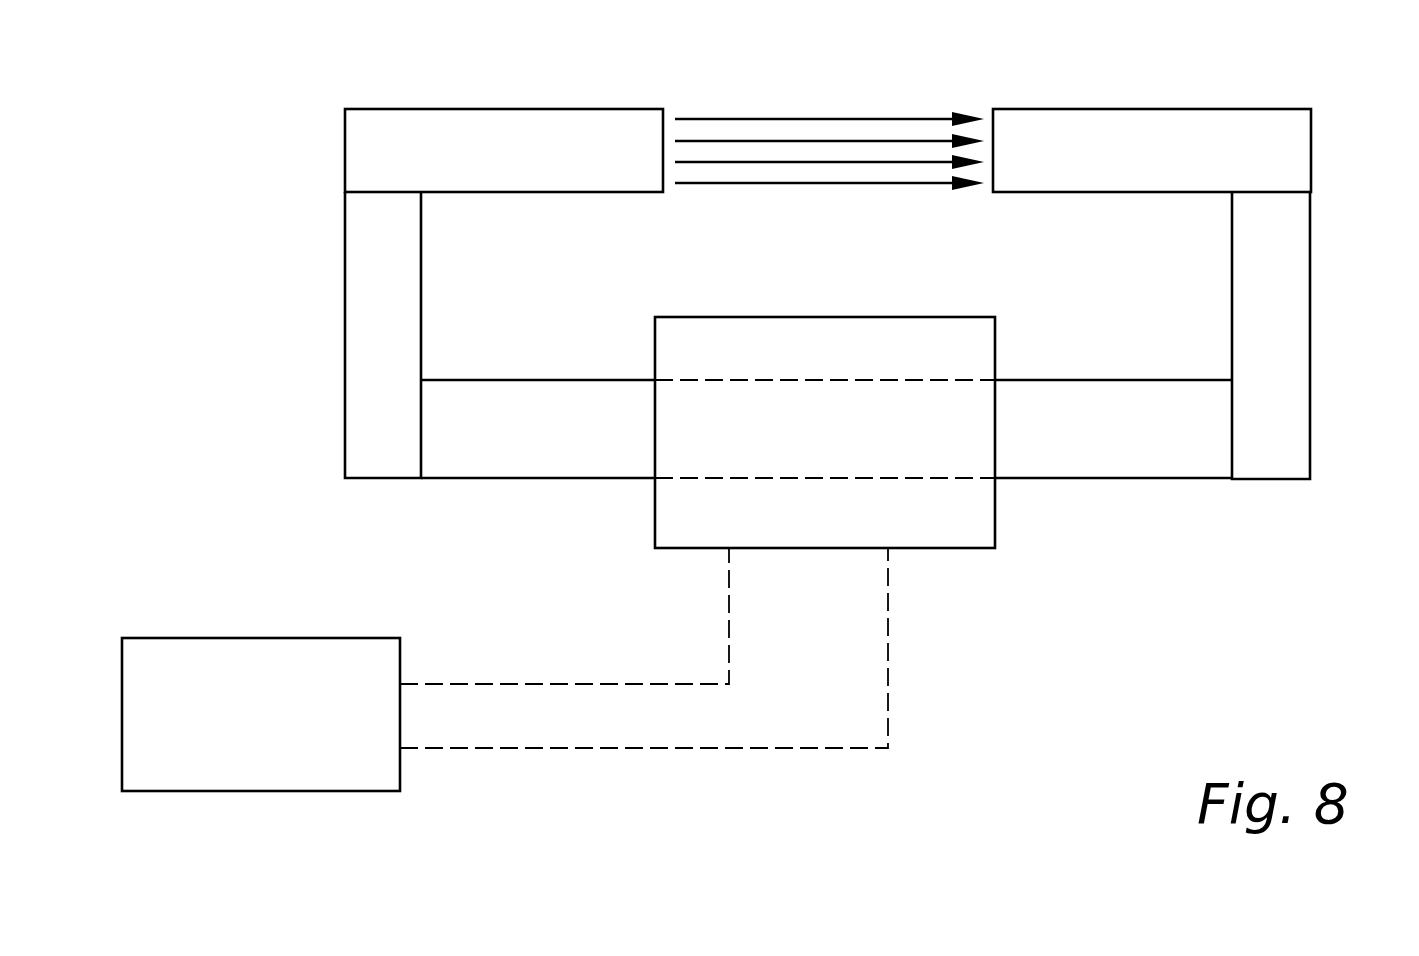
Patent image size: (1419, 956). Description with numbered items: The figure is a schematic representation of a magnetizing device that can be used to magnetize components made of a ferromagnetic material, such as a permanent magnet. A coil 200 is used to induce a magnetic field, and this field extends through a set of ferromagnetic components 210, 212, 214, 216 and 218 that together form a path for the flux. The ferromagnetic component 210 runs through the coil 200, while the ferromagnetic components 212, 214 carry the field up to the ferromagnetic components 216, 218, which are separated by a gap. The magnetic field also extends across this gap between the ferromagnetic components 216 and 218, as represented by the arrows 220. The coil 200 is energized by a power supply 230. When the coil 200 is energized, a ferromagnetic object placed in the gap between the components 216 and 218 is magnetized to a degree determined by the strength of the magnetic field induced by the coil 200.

The coil 200 is at (957, 518).
The ferromagnetic component 210 is at (520, 395).
The ferromagnetic component 212 is at (350, 338).
The ferromagnetic component 214 is at (1290, 325).
The ferromagnetic component 216 is at (420, 118).
The ferromagnetic component 218 is at (1126, 120).
The arrows 220 is at (795, 135).
The power supply 230 is at (278, 642).